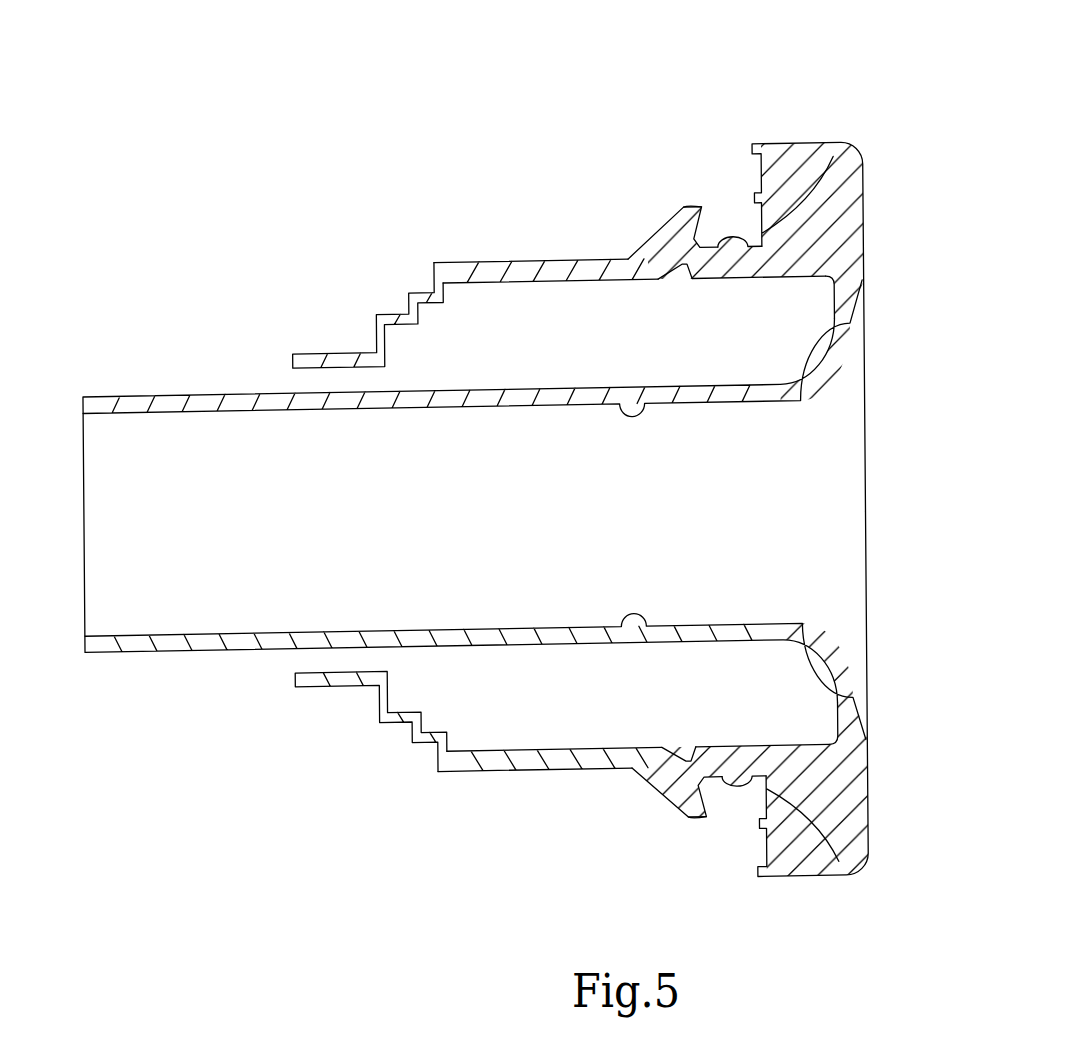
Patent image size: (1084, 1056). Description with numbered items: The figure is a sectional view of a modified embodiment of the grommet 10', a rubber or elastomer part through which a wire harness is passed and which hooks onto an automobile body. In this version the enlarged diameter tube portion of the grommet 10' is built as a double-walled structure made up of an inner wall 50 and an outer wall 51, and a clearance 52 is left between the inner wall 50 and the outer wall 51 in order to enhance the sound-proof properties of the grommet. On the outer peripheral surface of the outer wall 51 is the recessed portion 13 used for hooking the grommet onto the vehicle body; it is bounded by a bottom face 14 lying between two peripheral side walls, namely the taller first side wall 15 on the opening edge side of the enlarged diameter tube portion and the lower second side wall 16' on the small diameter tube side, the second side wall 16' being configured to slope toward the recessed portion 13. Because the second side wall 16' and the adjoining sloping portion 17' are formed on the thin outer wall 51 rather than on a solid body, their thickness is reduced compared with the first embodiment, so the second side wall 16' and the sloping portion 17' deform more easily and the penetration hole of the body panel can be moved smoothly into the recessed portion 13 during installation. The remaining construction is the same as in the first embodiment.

The grommet 10' is at (493, 452).
The recessed portion 13 is at (732, 237).
The bottom face 14 is at (722, 282).
The first side wall 15 is at (838, 138).
The second side wall 16' is at (682, 421).
The sloping portion 17' is at (655, 449).
The inner wall 50 is at (503, 410).
The outer wall 51 is at (543, 256).
The clearance 52 is at (407, 357).